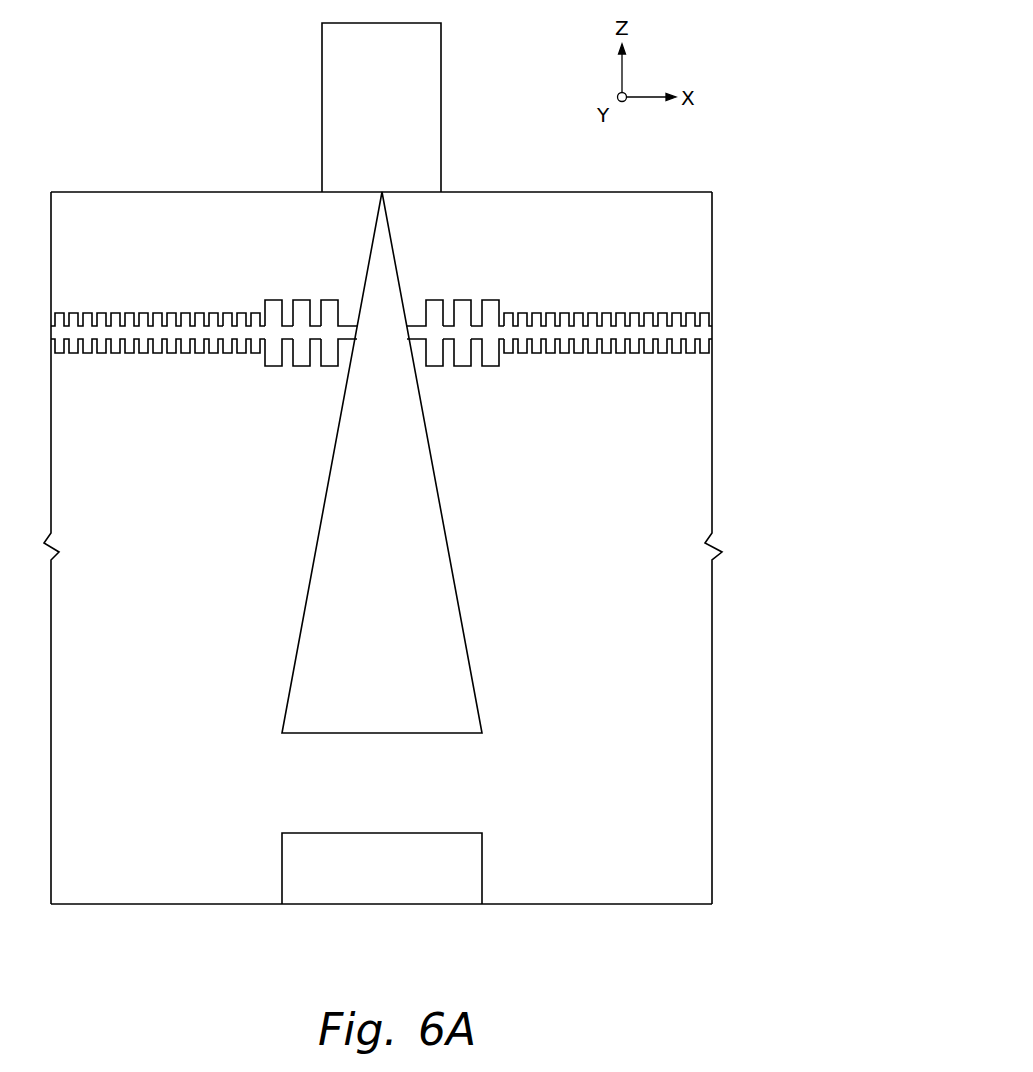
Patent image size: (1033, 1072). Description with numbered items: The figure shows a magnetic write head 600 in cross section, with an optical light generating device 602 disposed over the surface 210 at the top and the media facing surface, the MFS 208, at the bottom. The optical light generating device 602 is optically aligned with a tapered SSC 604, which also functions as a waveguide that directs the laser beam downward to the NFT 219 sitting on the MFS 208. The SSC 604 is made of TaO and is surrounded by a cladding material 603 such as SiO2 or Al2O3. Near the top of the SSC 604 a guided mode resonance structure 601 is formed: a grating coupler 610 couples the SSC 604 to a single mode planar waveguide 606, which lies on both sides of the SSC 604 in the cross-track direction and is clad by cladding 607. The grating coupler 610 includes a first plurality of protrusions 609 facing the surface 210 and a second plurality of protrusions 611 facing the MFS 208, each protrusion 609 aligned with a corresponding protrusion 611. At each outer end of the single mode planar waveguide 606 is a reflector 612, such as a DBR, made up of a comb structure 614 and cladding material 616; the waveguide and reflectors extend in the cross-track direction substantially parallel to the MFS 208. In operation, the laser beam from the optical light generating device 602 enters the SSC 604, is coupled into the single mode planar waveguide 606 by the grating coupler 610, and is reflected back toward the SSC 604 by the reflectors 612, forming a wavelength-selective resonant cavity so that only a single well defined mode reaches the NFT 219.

The magnetic write head 600 is at (125, 47).
The optical light generating device 602 is at (432, 106).
The surface 210 is at (181, 191).
The MFS 208 is at (604, 905).
The NFT 219 is at (377, 843).
The SSC 604 is at (460, 644).
The cladding material 603 is at (196, 580).
The guided mode resonance structure 601 is at (279, 393).
The single mode planar waveguide 606 is at (347, 325).
The cladding 607 is at (315, 304).
The first plurality of protrusions 609 is at (273, 301).
The grating coupler 610 is at (257, 384).
The second plurality of protrusions 611 is at (300, 358).
The reflector 612 is at (188, 366).
The comb structure 614 is at (247, 311).
The cladding material 616 is at (220, 311).